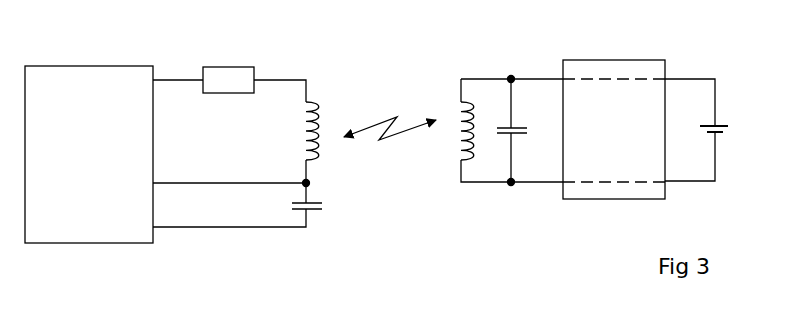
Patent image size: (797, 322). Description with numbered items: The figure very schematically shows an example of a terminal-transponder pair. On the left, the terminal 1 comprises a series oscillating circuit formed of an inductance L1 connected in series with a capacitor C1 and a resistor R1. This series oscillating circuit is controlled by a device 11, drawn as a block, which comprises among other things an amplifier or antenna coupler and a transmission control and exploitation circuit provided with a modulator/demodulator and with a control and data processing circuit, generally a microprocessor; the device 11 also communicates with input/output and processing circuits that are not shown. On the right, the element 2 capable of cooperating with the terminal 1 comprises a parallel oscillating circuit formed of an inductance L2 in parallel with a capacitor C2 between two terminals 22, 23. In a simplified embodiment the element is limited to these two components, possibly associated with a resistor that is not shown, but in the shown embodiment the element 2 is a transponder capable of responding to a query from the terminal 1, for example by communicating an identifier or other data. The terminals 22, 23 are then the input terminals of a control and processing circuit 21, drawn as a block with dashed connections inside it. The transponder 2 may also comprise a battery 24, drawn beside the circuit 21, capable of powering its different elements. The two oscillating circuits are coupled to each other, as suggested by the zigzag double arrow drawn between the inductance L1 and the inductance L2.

The terminal 1 is at (189, 165).
The device 11 is at (83, 66).
The resistor R1 is at (228, 68).
The inductance L1 is at (298, 131).
The capacitor C1 is at (322, 206).
The element 2 is at (593, 156).
The inductance L2 is at (452, 131).
The capacitor C2 is at (521, 130).
The control and processing circuit 21 is at (612, 60).
The terminal 22 is at (512, 78).
The terminal 23 is at (512, 184).
The battery 24 is at (722, 126).